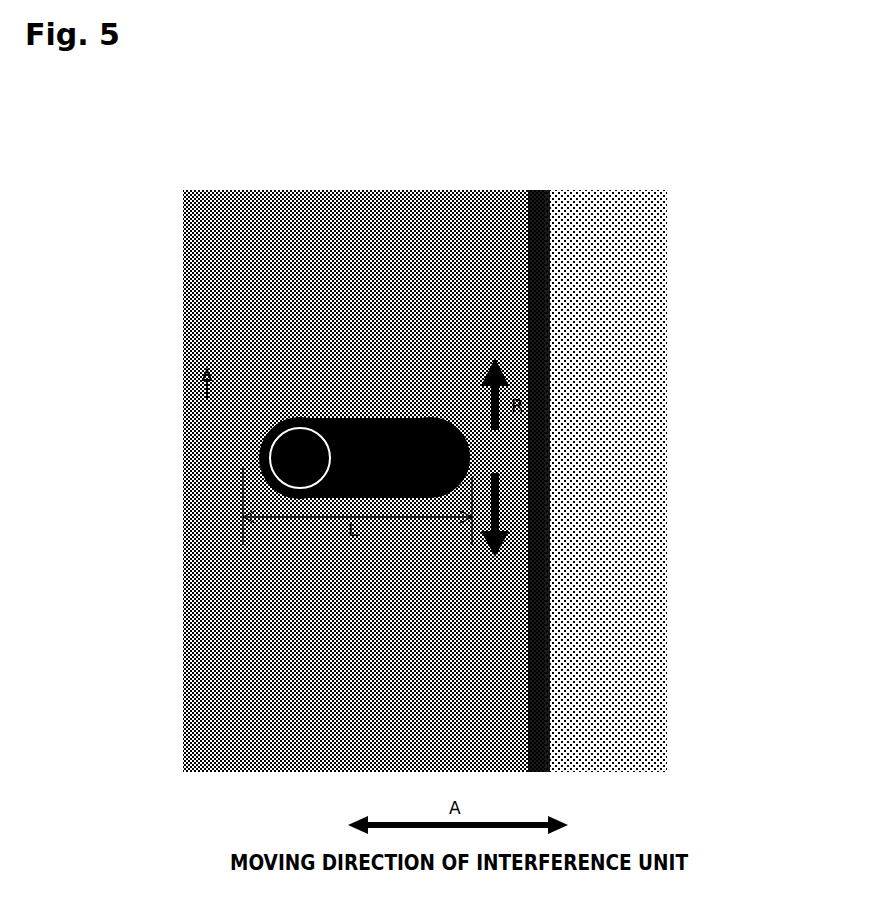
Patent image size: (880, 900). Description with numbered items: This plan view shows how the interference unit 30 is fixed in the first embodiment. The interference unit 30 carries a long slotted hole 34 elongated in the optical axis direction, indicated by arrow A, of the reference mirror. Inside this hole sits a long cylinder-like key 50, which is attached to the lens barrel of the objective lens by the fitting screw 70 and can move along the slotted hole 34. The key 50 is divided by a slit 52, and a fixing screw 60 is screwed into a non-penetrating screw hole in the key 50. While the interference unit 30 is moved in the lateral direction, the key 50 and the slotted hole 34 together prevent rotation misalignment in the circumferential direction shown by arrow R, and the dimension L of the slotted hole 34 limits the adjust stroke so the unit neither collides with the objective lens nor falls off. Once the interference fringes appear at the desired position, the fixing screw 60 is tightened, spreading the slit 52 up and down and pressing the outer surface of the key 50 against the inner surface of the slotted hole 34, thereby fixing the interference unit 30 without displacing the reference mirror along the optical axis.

The interference unit 30 is at (597, 190).
The long slotted hole 34 is at (245, 457).
The key 50 is at (363, 416).
The slit 52 is at (470, 442).
The fixing screw 60 is at (447, 416).
The fitting screw 70 is at (300, 420).